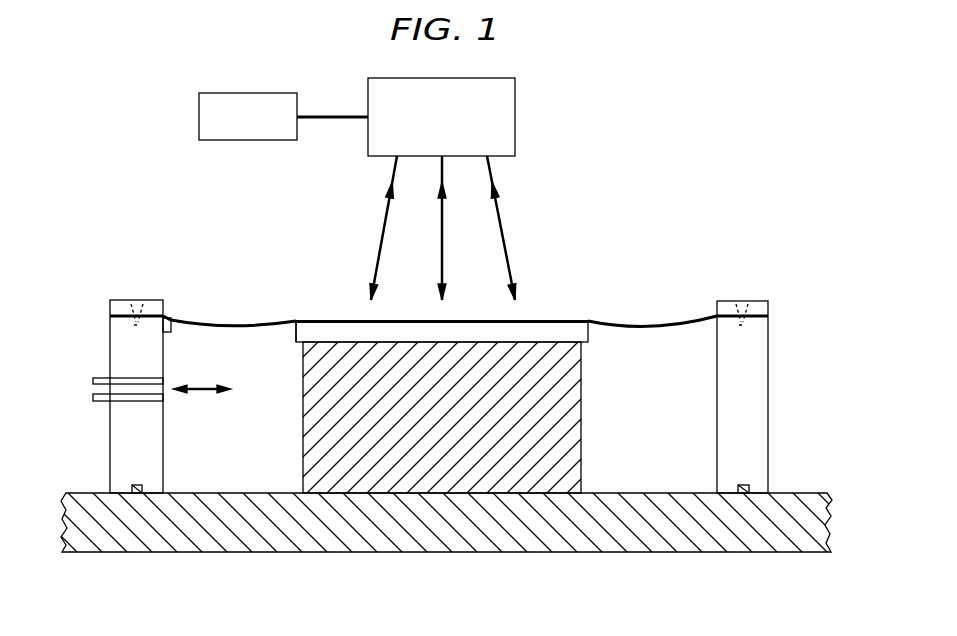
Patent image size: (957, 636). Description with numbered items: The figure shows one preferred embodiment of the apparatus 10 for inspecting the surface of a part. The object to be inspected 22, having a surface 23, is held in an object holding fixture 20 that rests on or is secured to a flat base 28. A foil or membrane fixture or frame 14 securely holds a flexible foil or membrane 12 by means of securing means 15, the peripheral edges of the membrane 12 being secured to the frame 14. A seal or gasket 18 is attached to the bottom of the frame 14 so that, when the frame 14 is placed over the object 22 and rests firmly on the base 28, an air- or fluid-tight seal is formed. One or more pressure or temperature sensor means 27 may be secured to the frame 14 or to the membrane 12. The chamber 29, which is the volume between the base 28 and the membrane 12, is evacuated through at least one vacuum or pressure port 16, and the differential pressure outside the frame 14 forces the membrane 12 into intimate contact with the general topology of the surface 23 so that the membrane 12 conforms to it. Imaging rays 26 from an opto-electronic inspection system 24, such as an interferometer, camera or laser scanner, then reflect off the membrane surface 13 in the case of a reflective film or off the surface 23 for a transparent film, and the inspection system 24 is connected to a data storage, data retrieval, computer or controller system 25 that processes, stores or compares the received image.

The apparatus 10 is at (652, 160).
The flexible foil or membrane 12 is at (656, 323).
The surface of the membrane 13 is at (546, 321).
The foil or membrane fixture or frame 14 is at (163, 302).
The securing means 15 is at (139, 299).
The vacuum or pressure port 16 is at (93, 381).
The seal or gasket 18 is at (130, 489).
The object holding fixture 20 is at (581, 454).
The object to be inspected 22 is at (590, 333).
The surface of the object 23 is at (303, 348).
The opto-electronic inspection system 24 is at (515, 100).
The data storage, data retrieval, computer or controller system 25 is at (199, 108).
The imaging rays 26 is at (508, 207).
The pressure or temperature sensor means 27 is at (171, 331).
The flat base 28 is at (792, 497).
The chamber 29 is at (268, 462).